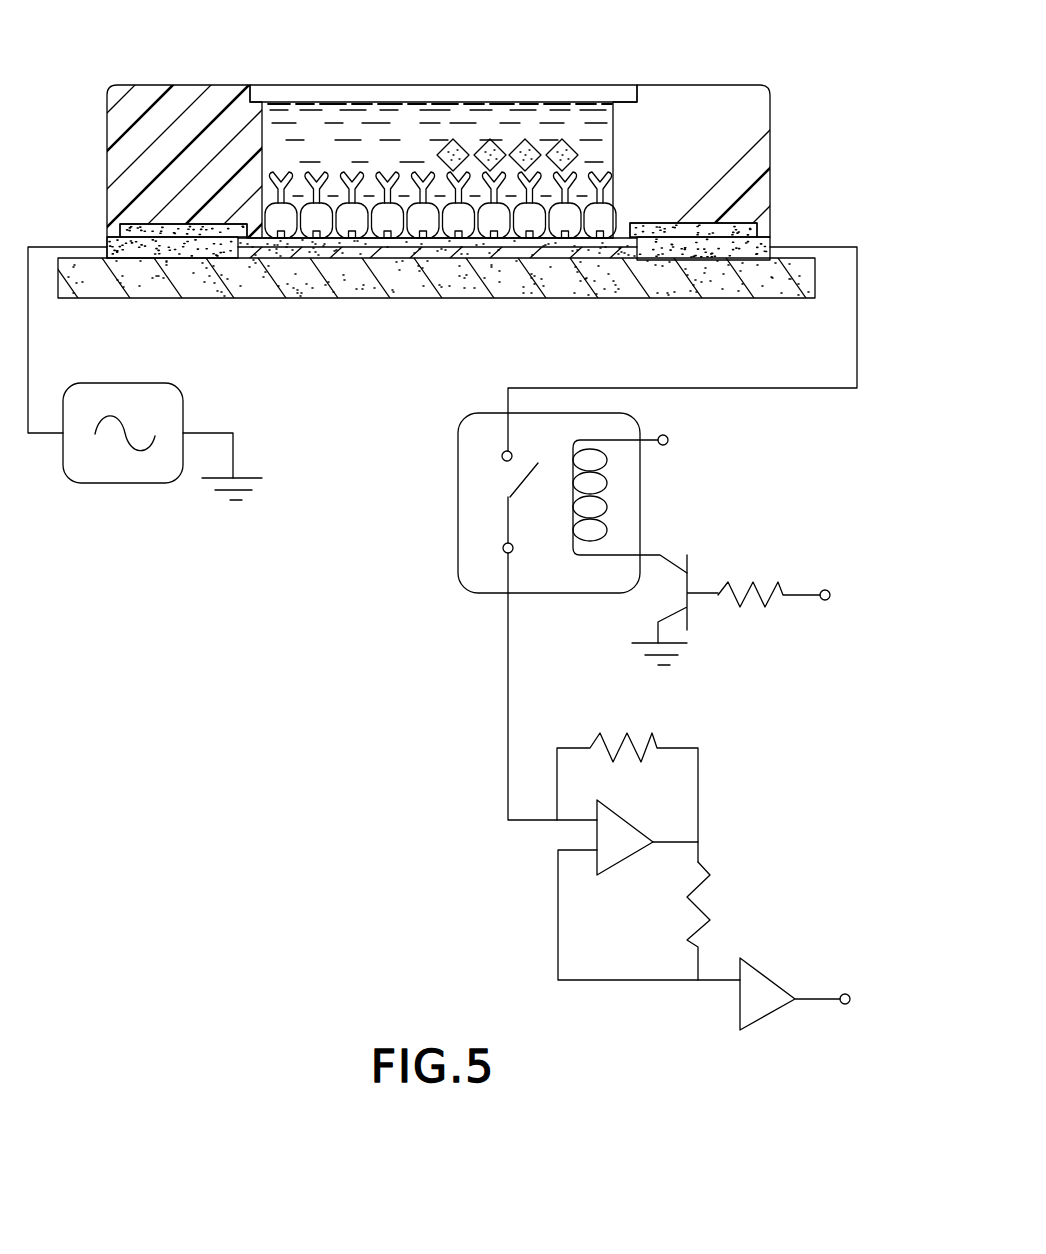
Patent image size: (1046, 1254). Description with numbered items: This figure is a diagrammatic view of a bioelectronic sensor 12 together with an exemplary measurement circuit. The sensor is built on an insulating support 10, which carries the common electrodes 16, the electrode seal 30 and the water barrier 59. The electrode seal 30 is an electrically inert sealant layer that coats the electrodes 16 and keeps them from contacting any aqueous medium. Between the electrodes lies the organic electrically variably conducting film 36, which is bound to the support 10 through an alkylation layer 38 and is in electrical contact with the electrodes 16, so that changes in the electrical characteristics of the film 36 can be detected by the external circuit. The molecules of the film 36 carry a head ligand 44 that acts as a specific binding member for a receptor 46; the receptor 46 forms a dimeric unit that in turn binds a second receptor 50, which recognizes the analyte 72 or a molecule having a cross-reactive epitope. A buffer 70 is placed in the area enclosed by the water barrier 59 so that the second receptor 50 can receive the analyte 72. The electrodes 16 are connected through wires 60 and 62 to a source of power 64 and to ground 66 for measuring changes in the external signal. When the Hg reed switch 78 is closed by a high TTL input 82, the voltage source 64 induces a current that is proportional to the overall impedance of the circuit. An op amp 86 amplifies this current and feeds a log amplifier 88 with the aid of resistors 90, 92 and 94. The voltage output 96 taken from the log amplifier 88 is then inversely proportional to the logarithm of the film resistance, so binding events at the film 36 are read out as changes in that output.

The insulating support 10 is at (172, 300).
The bioelectronic sensor 12 is at (703, 80).
The common electrodes 16 is at (772, 244).
The electrode seal 30 is at (100, 147).
The electrically conducting film 36 is at (388, 242).
The alkylation layer 38 is at (352, 250).
The head ligand 44 is at (450, 241).
The receptor 46 is at (522, 220).
The second receptor 50 is at (370, 158).
The water barrier 59 is at (497, 85).
The wire 60 is at (28, 302).
The wire 62 is at (855, 318).
The source of power 64 is at (667, 447).
The ground 66 is at (235, 443).
The buffer 70 is at (555, 125).
The analyte 72 is at (449, 137).
The Hg reed switch 78 is at (473, 595).
The TTL input 82 is at (838, 588).
The op amp 86 is at (622, 862).
The log amplifier 88 is at (783, 987).
The resistor 90 is at (737, 590).
The resistor 92 is at (602, 738).
The resistor 94 is at (700, 900).
The voltage output 96 is at (846, 993).